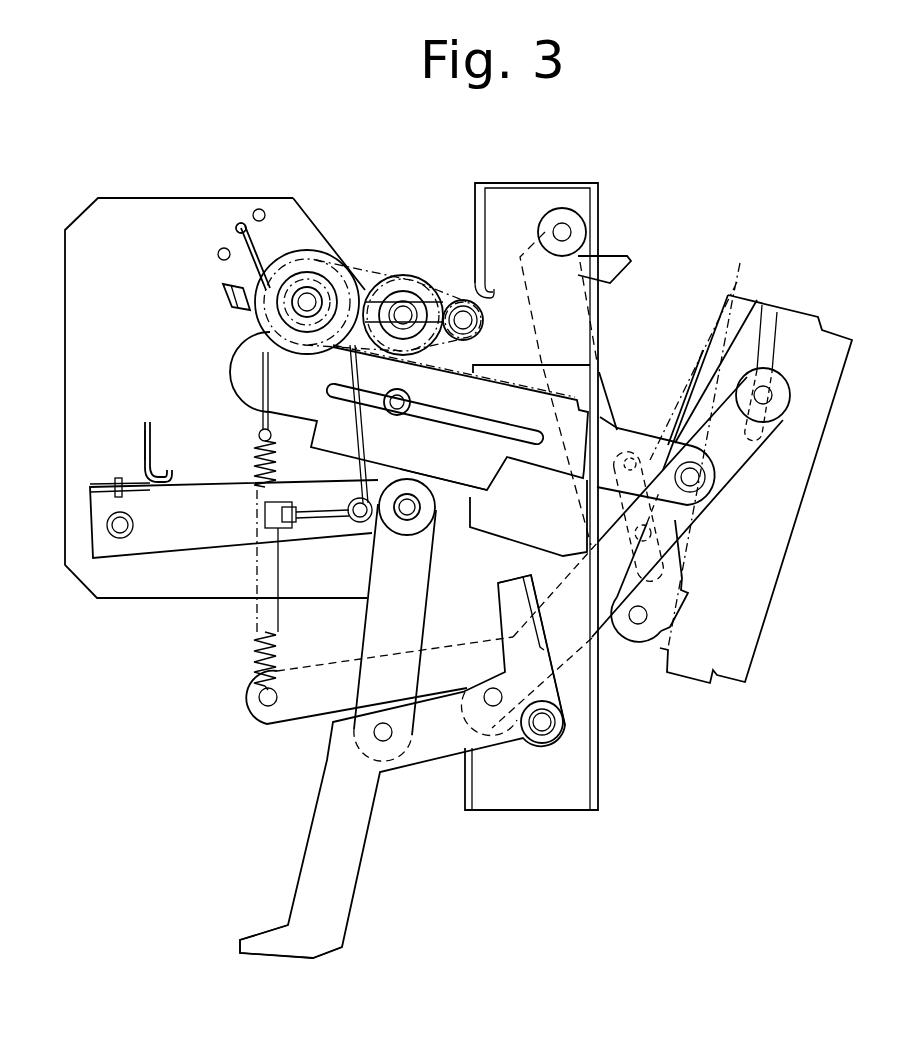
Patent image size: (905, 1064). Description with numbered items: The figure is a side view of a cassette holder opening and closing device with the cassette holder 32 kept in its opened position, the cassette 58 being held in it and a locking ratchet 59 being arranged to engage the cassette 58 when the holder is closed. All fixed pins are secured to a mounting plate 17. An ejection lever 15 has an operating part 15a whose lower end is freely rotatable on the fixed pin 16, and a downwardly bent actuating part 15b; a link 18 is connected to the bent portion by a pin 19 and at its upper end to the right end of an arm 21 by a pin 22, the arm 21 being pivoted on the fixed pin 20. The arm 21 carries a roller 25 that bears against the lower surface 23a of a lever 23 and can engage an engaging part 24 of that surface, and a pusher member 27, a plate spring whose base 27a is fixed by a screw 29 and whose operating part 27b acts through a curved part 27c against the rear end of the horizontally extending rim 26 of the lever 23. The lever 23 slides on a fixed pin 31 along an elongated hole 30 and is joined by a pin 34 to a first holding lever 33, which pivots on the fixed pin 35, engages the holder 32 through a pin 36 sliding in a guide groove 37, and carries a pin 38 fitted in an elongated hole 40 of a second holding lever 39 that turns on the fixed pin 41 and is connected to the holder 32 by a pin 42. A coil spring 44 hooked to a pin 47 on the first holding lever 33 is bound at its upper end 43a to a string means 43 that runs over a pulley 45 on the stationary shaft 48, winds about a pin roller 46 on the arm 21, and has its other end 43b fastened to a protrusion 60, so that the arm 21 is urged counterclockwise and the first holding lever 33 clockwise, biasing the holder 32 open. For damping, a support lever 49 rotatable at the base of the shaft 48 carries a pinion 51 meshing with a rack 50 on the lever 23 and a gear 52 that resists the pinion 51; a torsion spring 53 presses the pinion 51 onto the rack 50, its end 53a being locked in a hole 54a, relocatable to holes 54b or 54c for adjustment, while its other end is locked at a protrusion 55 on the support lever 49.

The ejection lever 15 is at (430, 773).
The operating part 15a is at (538, 640).
The actuating part 15b is at (298, 880).
The fixed pin 16 is at (562, 728).
The mounting plate 17 is at (528, 182).
The link 18 is at (425, 621).
The pin 19 is at (385, 741).
The fixed pin 20 is at (134, 526).
The arm 21 is at (150, 566).
The pin 22 is at (407, 522).
The lever 23 is at (240, 362).
The lower surface 23a is at (430, 478).
The engaging part 24 is at (500, 486).
The roller 25 is at (412, 520).
The horizontally extending rim 26 is at (269, 412).
The pusher member 27 is at (143, 440).
The base 27a is at (100, 497).
The operating part 27b is at (151, 442).
The curved part 27c is at (172, 478).
The screw 29 is at (118, 478).
The elongated hole 30 is at (417, 412).
The fixed pin 31 is at (404, 396).
The cassette holder 32 is at (815, 472).
The first holding lever 33 is at (690, 540).
The pin 34 is at (700, 483).
The fixed pin 35 is at (496, 708).
The pin 36 is at (772, 395).
The guide groove 37 is at (773, 327).
The pin 38 is at (636, 540).
The second holding lever 39 is at (603, 382).
The elongated hole 40 is at (633, 452).
The fixed pin 41 is at (565, 228).
The pin 42 is at (648, 618).
The string means 43 is at (356, 434).
The end of string means 43a is at (259, 433).
The other end of string means 43b is at (291, 527).
The coil spring 44 is at (278, 647).
The pulley 45 is at (297, 248).
The pin roller 46 is at (348, 510).
The pin 47 is at (265, 703).
The stationary shaft 48 is at (308, 296).
The support lever 49 is at (228, 290).
The rack 50 is at (466, 367).
The pinion 51 is at (395, 280).
The gear 52 is at (456, 302).
The torsion spring 53 is at (252, 250).
The end of torsion spring 53a is at (236, 226).
The hole 54a is at (239, 223).
The hole 54b is at (259, 209).
The hole 54c is at (219, 252).
The protrusion 55 is at (222, 304).
The cassette 58 is at (740, 263).
The locking ratchet 59 is at (618, 254).
The protrusion 60 is at (288, 503).